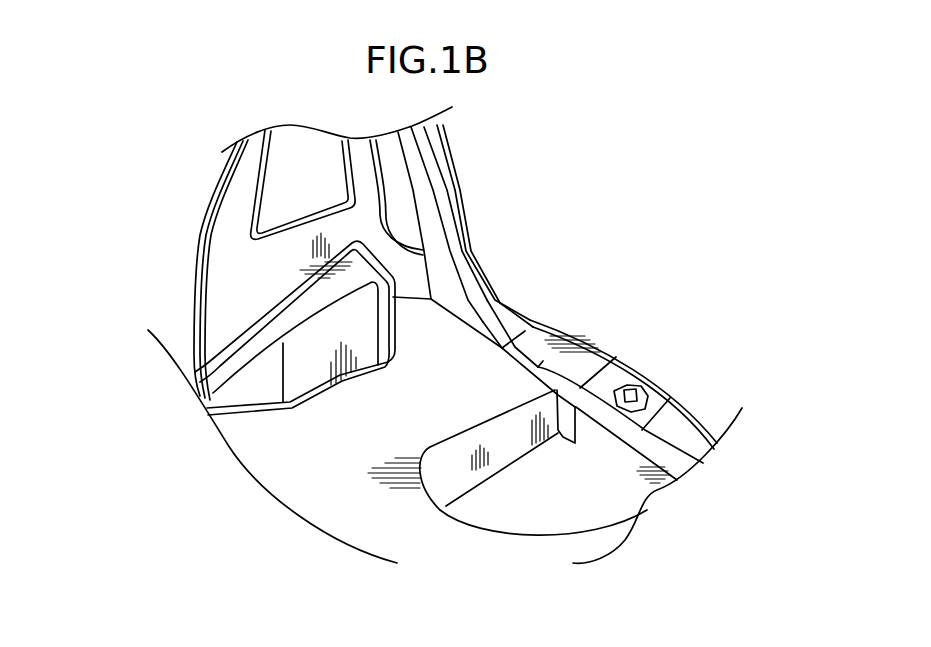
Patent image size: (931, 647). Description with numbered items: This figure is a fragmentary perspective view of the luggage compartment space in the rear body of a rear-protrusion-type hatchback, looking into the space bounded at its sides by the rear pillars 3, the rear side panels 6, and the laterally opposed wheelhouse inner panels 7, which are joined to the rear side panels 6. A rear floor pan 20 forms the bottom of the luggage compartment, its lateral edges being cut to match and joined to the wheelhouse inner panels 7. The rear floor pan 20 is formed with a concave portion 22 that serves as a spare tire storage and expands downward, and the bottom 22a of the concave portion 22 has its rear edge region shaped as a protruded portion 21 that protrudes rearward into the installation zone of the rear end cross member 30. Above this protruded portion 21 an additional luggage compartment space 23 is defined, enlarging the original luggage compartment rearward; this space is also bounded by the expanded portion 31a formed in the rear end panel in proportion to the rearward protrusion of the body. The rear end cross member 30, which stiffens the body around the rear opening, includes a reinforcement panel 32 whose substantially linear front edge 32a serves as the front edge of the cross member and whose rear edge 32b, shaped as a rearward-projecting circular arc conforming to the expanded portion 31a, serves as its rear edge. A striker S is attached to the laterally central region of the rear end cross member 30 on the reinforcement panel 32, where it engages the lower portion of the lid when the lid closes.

The rear pillar 3 is at (458, 183).
The rear side panel 6 is at (252, 170).
The wheelhouse inner panel 7 is at (288, 290).
The rear floor pan 20 is at (268, 462).
The protruded portion 21 is at (597, 437).
The concave portion 22 is at (527, 543).
The bottom of the concave portion 22a is at (507, 507).
The additional luggage compartment space 23 is at (624, 458).
The rear end cross member 30 is at (572, 300).
The expanded portion 31a is at (541, 310).
The reinforcement panel 32 is at (502, 347).
The front edge 32a is at (538, 369).
The rear edge 32b is at (603, 342).
The striker S is at (628, 386).